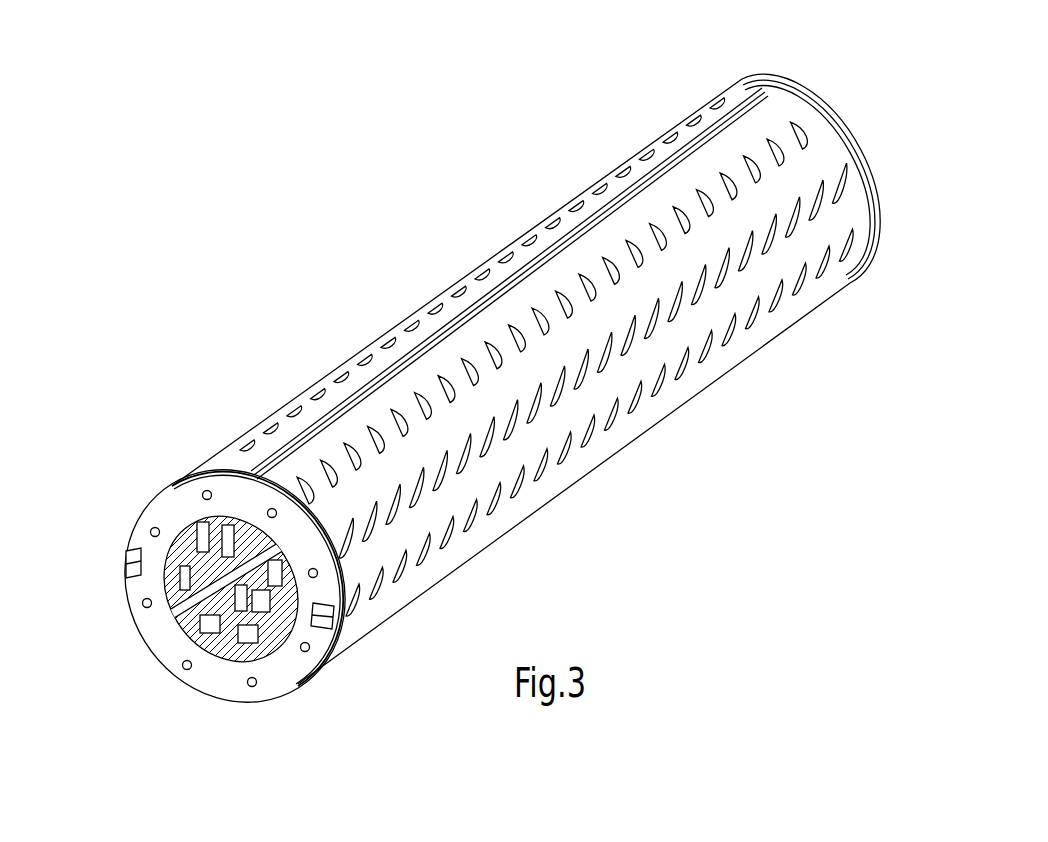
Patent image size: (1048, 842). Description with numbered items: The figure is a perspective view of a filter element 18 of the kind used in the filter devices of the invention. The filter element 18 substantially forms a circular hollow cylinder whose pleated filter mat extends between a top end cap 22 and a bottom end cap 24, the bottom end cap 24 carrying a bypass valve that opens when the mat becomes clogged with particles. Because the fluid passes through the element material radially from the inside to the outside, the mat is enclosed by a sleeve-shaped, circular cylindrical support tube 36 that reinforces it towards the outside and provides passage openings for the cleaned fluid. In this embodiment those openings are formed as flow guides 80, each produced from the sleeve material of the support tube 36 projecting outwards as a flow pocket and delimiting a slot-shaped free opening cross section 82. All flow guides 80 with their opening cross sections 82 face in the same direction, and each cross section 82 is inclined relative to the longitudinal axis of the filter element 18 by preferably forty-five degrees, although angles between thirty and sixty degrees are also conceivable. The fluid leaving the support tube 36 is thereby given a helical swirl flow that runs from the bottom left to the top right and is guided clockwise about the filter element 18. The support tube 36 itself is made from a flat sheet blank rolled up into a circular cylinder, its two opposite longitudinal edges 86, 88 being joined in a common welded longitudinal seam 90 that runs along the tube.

The filter element 18 is at (708, 368).
The top end cap 22 is at (177, 650).
The bottom end cap 24 is at (877, 194).
The support tube 36 is at (595, 468).
The flow guide 80 is at (373, 430).
The free opening cross section 82 is at (173, 632).
The longitudinal edge 86 is at (371, 428).
The longitudinal edge 88 is at (674, 163).
The welded longitudinal seam 90 is at (598, 201).